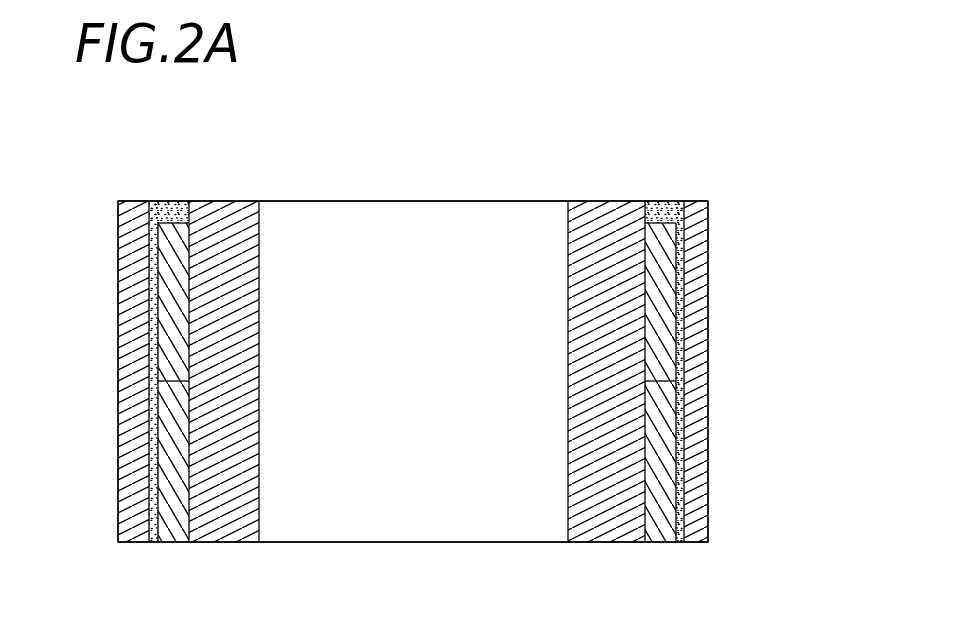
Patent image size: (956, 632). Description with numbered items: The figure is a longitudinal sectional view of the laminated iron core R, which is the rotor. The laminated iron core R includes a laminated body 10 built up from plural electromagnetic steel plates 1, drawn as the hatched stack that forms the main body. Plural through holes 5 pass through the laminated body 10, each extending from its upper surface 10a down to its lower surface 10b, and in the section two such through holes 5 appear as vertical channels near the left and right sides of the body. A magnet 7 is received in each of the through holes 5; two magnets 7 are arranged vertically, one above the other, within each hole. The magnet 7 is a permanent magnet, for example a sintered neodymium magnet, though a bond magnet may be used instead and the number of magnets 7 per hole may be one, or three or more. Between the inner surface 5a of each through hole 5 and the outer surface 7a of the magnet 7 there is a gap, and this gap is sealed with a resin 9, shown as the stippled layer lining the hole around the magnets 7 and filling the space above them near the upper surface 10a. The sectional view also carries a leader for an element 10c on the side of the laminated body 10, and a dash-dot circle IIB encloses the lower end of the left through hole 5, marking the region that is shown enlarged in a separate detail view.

The electromagnetic steel plate 1 is at (703, 292).
The through hole 5 is at (180, 201).
The inner surface of the through hole 5a is at (154, 395).
The magnet 7 is at (172, 297).
The outer surface of the magnet 7a is at (150, 462).
The resin 9 is at (159, 201).
The laminated body 10 is at (762, 331).
The upper surface of the laminated body 10a is at (694, 201).
The lower surface of the laminated body 10b is at (690, 542).
The inner wall 10c is at (118, 343).
The laminated iron core R is at (712, 143).
The circle IIB is at (146, 528).